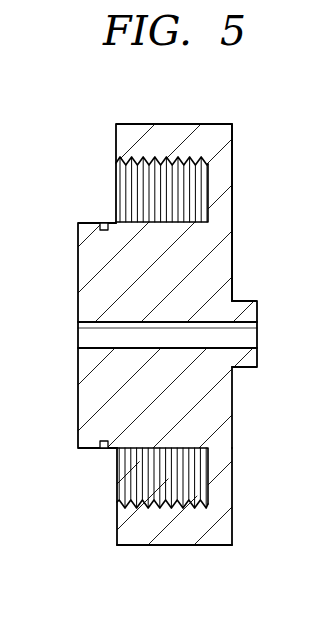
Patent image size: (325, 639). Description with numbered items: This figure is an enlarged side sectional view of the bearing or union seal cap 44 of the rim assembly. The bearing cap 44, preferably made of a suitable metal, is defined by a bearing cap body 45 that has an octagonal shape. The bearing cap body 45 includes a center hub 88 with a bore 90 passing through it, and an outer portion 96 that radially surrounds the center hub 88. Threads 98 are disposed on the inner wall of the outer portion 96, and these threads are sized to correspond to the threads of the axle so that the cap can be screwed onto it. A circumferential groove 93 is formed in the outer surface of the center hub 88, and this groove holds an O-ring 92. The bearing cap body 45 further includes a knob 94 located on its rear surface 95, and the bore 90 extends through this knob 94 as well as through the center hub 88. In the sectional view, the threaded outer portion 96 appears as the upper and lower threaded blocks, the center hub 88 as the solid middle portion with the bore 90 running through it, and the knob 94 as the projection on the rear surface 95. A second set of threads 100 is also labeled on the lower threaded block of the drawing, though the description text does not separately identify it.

The first end cap / upper threaded block 44 is at (181, 112).
The second end cap / lower threaded block 45 is at (238, 432).
The central body 88 is at (84, 268).
The slot 90 is at (84, 340).
The lower pin / notch 92 is at (103, 449).
The upper pin / notch 93 is at (100, 222).
The flange 94 is at (238, 300).
The outer surface of upper block 95 is at (233, 163).
The bottom surface of lower block 96 is at (205, 545).
The upper threads 98 is at (117, 175).
The lower threads 100 is at (117, 497).